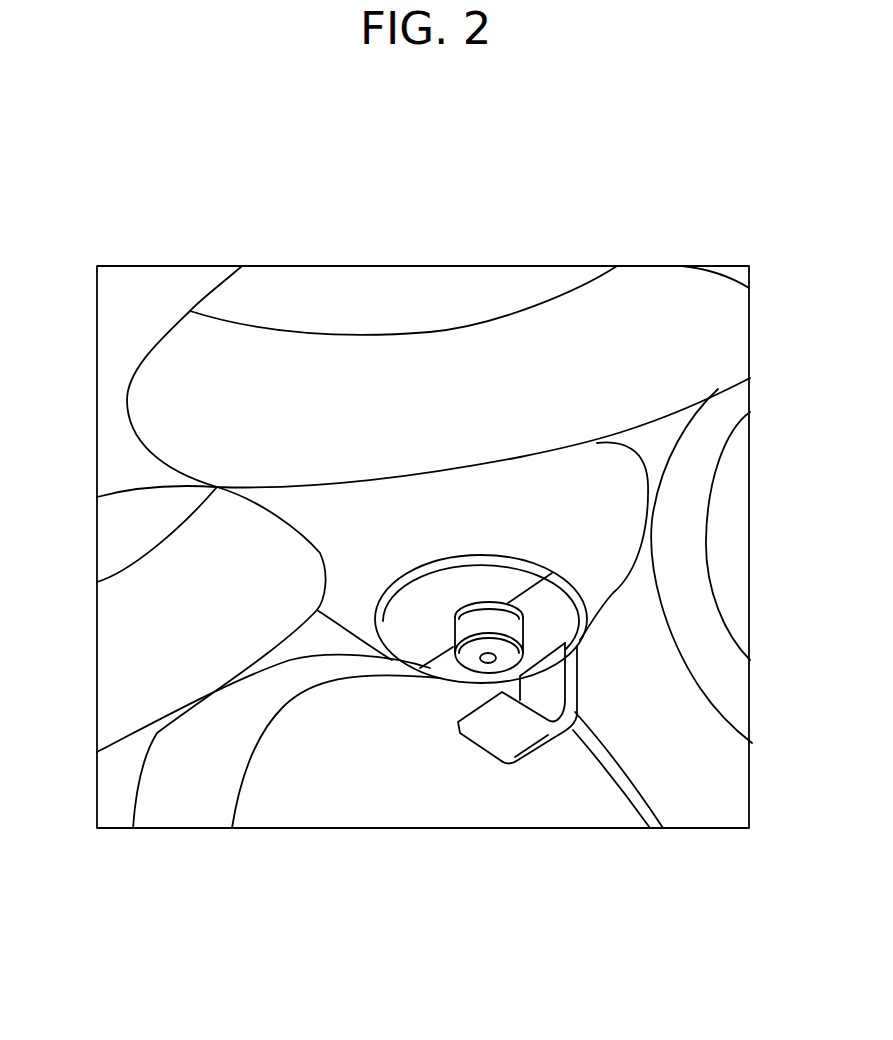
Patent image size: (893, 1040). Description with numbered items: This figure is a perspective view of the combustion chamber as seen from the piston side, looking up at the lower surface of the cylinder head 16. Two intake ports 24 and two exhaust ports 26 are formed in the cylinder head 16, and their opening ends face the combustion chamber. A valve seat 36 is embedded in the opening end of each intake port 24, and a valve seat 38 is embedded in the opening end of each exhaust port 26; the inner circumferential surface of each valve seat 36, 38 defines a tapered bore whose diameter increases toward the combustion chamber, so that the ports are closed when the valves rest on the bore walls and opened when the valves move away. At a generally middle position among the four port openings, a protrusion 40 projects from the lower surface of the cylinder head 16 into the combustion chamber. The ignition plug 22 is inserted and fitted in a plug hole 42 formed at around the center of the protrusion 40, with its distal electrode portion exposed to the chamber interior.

The cylinder head 16 is at (697, 852).
The ignition plug 22 is at (402, 607).
The intake port 24 is at (260, 303).
The exhaust port 26 is at (710, 548).
The valve seat 36 is at (667, 327).
The valve seat 38 is at (718, 688).
The protrusion 40 is at (477, 517).
The plug hole 42 is at (537, 567).